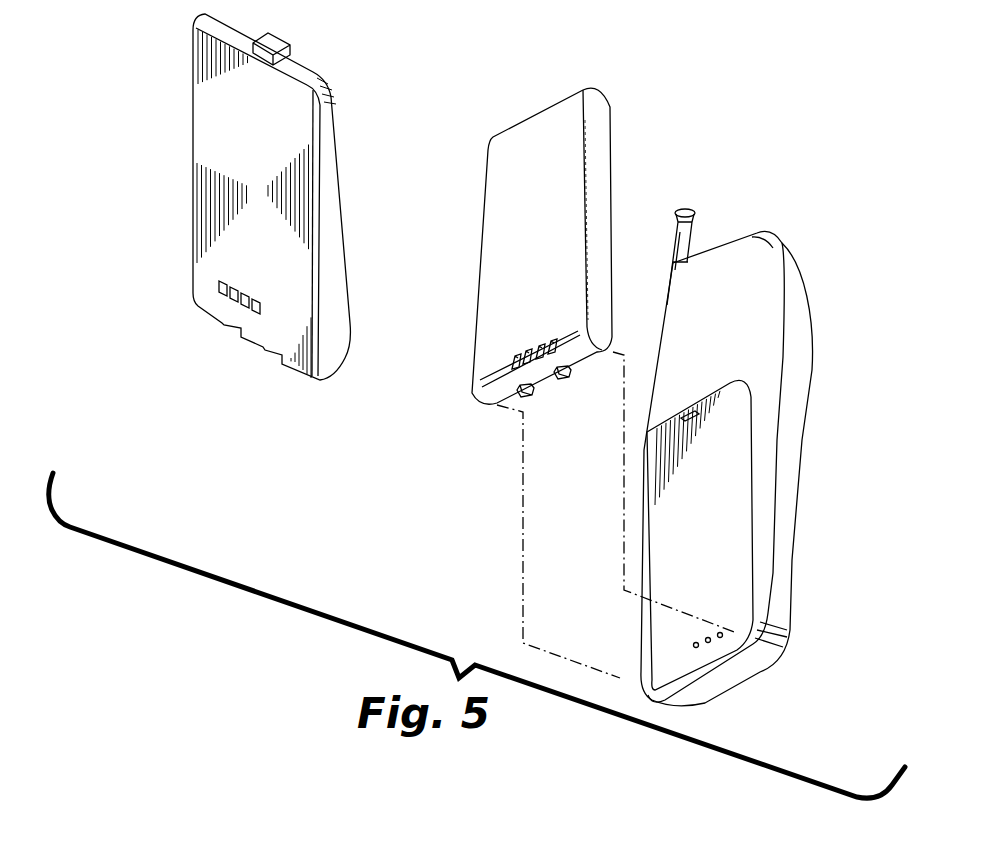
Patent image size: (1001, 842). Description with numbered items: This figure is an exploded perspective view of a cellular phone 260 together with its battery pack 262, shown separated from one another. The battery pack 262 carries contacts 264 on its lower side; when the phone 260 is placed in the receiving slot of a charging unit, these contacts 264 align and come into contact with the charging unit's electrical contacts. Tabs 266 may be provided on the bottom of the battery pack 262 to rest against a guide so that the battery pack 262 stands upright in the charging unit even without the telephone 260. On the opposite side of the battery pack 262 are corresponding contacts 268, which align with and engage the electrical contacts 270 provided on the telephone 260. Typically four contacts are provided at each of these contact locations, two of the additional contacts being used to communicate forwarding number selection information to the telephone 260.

The cellular phone 260 is at (738, 272).
The battery pack 262 is at (550, 128).
The contacts 264 is at (548, 348).
The latch members 266 is at (563, 381).
The corresponding contacts 268 is at (237, 303).
The electrical contacts 270 is at (733, 627).